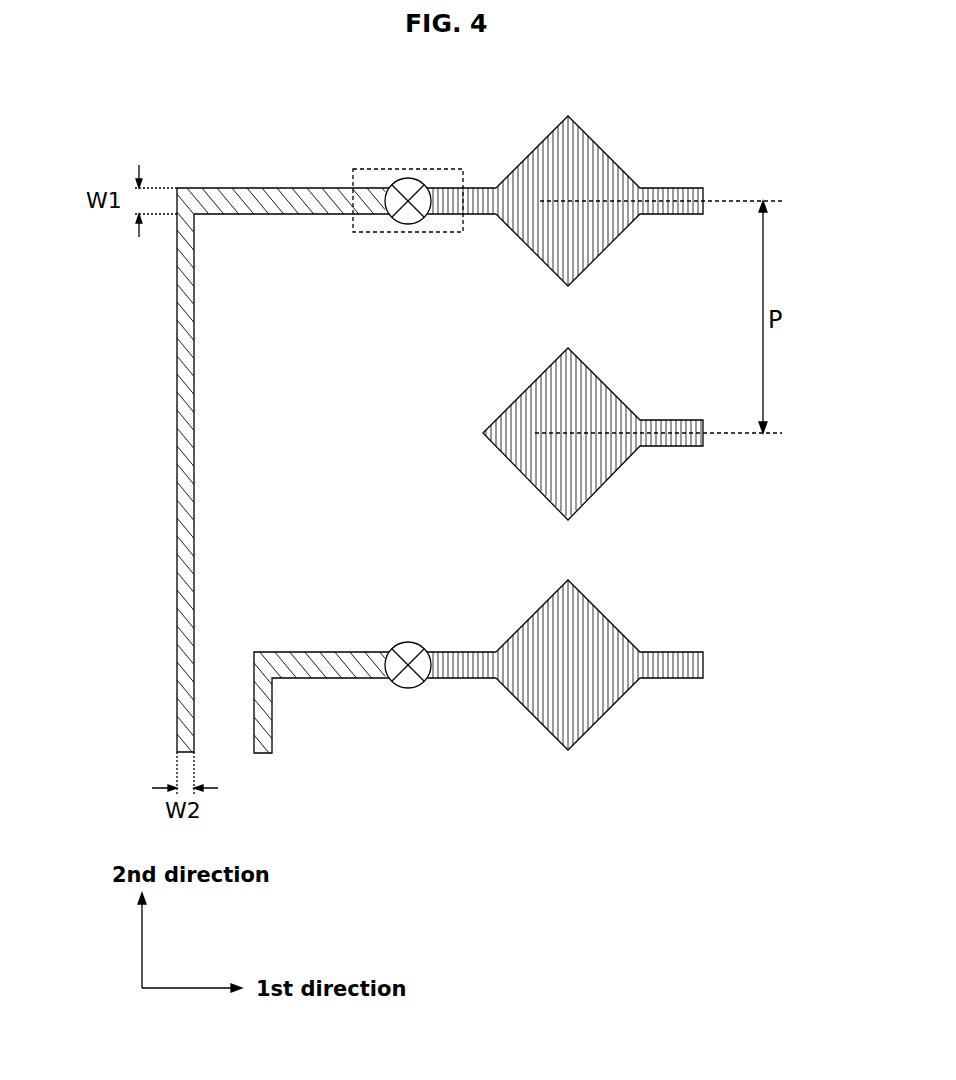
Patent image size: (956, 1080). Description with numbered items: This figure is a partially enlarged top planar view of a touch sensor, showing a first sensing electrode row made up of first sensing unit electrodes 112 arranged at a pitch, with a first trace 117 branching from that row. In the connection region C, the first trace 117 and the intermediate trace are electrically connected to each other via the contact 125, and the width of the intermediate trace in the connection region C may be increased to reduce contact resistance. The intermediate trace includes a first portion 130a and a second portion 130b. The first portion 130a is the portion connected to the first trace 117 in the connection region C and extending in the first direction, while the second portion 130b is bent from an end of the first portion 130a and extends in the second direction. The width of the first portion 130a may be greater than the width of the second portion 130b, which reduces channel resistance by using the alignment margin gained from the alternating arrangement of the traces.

The first portion 130a is at (262, 192).
The second portion 130b is at (194, 424).
The first sensing unit electrodes 112 is at (595, 156).
The first trace 117 is at (452, 679).
The contact 125 is at (410, 644).
The connection region C is at (410, 169).